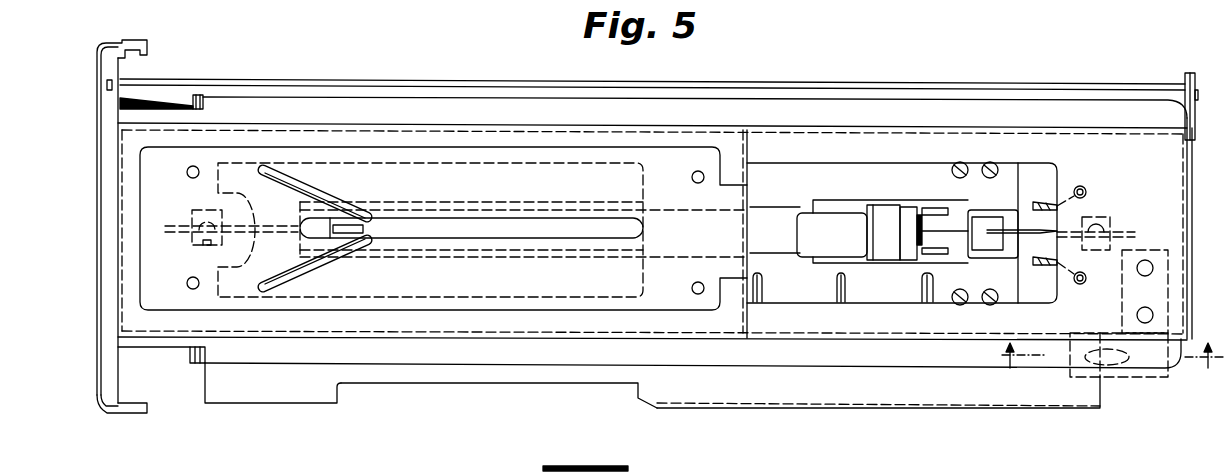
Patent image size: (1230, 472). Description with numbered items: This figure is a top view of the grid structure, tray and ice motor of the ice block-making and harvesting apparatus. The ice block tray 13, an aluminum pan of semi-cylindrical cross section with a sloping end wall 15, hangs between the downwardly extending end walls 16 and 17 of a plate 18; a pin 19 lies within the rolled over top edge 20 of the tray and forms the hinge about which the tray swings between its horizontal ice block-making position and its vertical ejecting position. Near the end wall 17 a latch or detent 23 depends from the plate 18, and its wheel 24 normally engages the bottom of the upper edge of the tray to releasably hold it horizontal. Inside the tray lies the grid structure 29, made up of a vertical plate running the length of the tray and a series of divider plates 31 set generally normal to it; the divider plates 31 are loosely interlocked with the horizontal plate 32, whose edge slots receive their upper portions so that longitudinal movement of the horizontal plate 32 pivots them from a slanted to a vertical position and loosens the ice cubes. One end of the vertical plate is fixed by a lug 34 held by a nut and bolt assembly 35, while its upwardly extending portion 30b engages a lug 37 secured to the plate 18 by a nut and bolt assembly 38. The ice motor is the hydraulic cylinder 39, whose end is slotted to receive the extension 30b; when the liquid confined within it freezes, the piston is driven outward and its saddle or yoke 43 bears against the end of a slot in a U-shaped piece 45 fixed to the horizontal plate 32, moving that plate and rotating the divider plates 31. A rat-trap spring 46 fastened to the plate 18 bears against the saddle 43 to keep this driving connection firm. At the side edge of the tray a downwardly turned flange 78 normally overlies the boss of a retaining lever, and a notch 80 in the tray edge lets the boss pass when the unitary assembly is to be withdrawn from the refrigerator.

The ice block tray 13 is at (305, 408).
The sloping end wall 15 is at (1114, 369).
The end wall of plate 16 is at (114, 108).
The end wall of plate 17 is at (1192, 73).
The plate 18 is at (843, 98).
The pin 19 is at (1198, 96).
The rolled over top edge 20 is at (1165, 86).
The latch or detent 23 is at (1118, 366).
The wheel 24 is at (1130, 380).
The grid structure 29 is at (886, 186).
The upwardly extending portion of vertical plate 30b is at (318, 228).
The divider plates 31 is at (838, 284).
The horizontal plate 32 is at (836, 172).
The lug 34 is at (1092, 268).
The nut and bolt assembly 35 is at (1098, 222).
The lug 37 is at (193, 237).
The nut and bolt assembly 38 is at (209, 247).
The hydraulic cylinder 39 is at (765, 220).
The saddle or yoke 43 is at (934, 255).
The U-shaped piece 45 is at (1009, 180).
The rat-trap spring 46 is at (1031, 208).
The downwardly turned flange 78 is at (860, 411).
The notch 80 is at (601, 385).